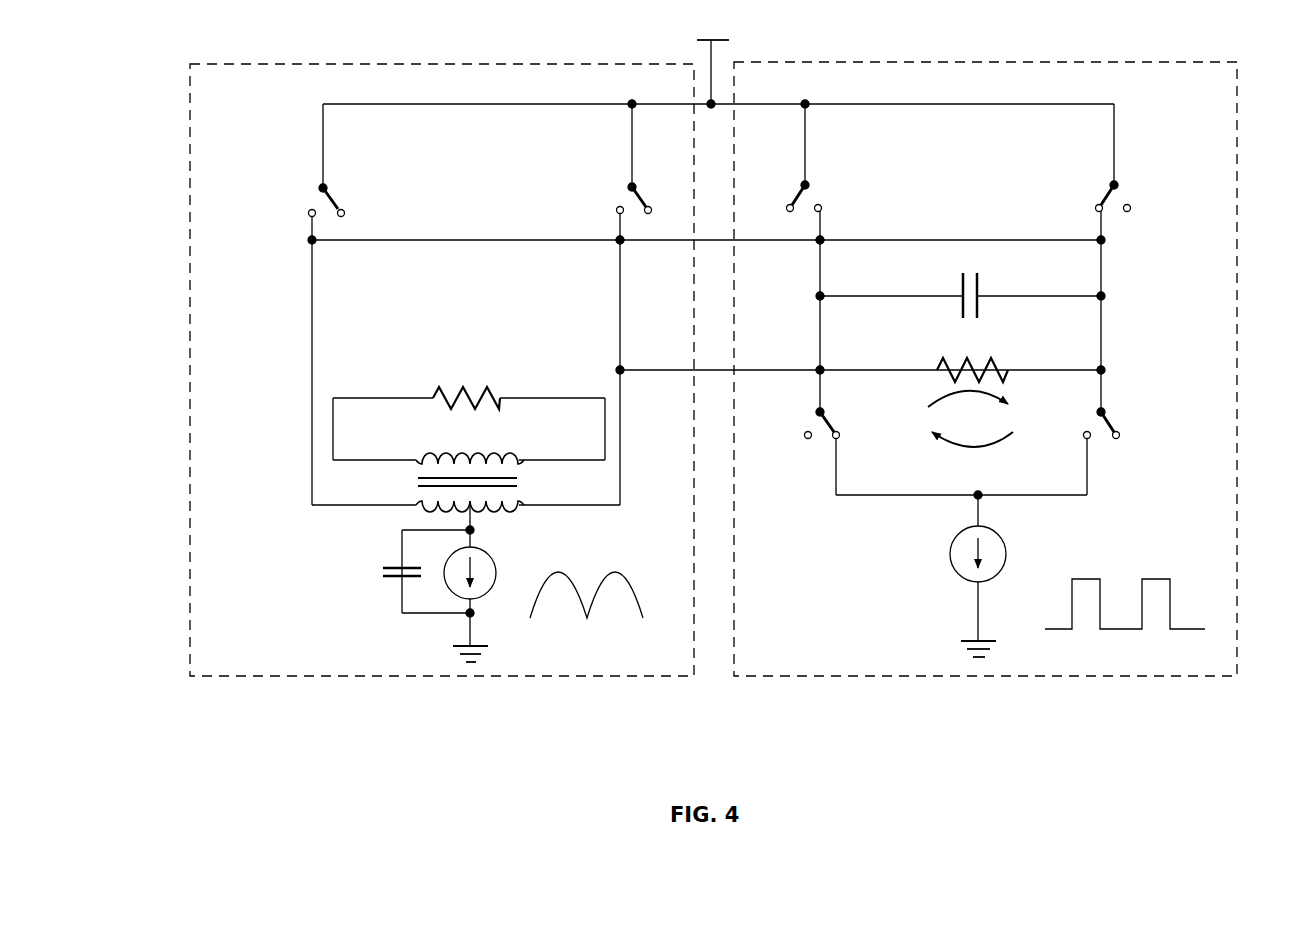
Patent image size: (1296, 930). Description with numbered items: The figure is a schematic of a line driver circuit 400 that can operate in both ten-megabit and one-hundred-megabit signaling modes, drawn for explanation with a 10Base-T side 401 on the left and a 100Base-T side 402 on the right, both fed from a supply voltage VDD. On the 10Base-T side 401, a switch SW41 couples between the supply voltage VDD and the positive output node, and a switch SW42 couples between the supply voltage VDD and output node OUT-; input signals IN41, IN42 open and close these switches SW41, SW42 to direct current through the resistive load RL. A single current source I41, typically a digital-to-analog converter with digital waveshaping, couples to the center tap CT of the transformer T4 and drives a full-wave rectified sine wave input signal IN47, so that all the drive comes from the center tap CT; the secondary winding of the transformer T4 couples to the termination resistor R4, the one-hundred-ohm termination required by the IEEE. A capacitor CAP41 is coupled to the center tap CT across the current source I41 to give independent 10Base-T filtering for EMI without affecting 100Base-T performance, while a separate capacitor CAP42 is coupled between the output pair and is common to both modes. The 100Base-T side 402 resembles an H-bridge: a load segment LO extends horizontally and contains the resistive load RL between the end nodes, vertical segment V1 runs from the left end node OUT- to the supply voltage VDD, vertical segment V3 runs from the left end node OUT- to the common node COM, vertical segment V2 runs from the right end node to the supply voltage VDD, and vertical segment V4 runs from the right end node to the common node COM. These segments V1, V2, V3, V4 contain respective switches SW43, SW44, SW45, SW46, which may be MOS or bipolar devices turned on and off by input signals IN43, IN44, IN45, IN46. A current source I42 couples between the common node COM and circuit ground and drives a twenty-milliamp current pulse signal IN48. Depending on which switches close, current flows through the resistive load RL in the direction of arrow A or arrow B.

The line driver circuit 400 is at (736, 728).
The 10Base-T side 401 is at (537, 60).
The 100Base-T side 402 is at (991, 60).
The supply voltage VDD is at (712, 55).
The switch SW41 is at (336, 200).
The switch SW42 is at (628, 195).
The switch SW43 is at (795, 195).
The switch SW44 is at (1104, 195).
The switch SW45 is at (825, 447).
The switch SW46 is at (1120, 423).
The input signal IN41 is at (316, 200).
The input signal IN42 is at (590, 210).
The input signal IN43 is at (812, 193).
The input signal IN44 is at (1122, 193).
The input signal IN45 is at (814, 420).
The input signal IN46 is at (1116, 405).
The full-wave rectified sine wave input signal IN47 is at (506, 575).
The current pulse signal IN48 is at (1016, 578).
The output node OUT- is at (858, 359).
The vertical segment V1 is at (805, 120).
The vertical segment V2 is at (1114, 125).
The vertical segment V3 is at (838, 455).
The vertical segment V4 is at (1089, 462).
The capacitor CAP42 is at (960, 289).
The resistive load RL is at (972, 354).
The load segment LO is at (1070, 368).
The arrow A is at (1020, 438).
The arrow B is at (930, 397).
The common node COM is at (961, 483).
The current source I42 is at (1006, 554).
The transformer T4 is at (584, 508).
The termination resistor R4 is at (466, 385).
The center tap CT is at (474, 515).
The current source I41 is at (483, 594).
The capacitor CAP41 is at (388, 567).